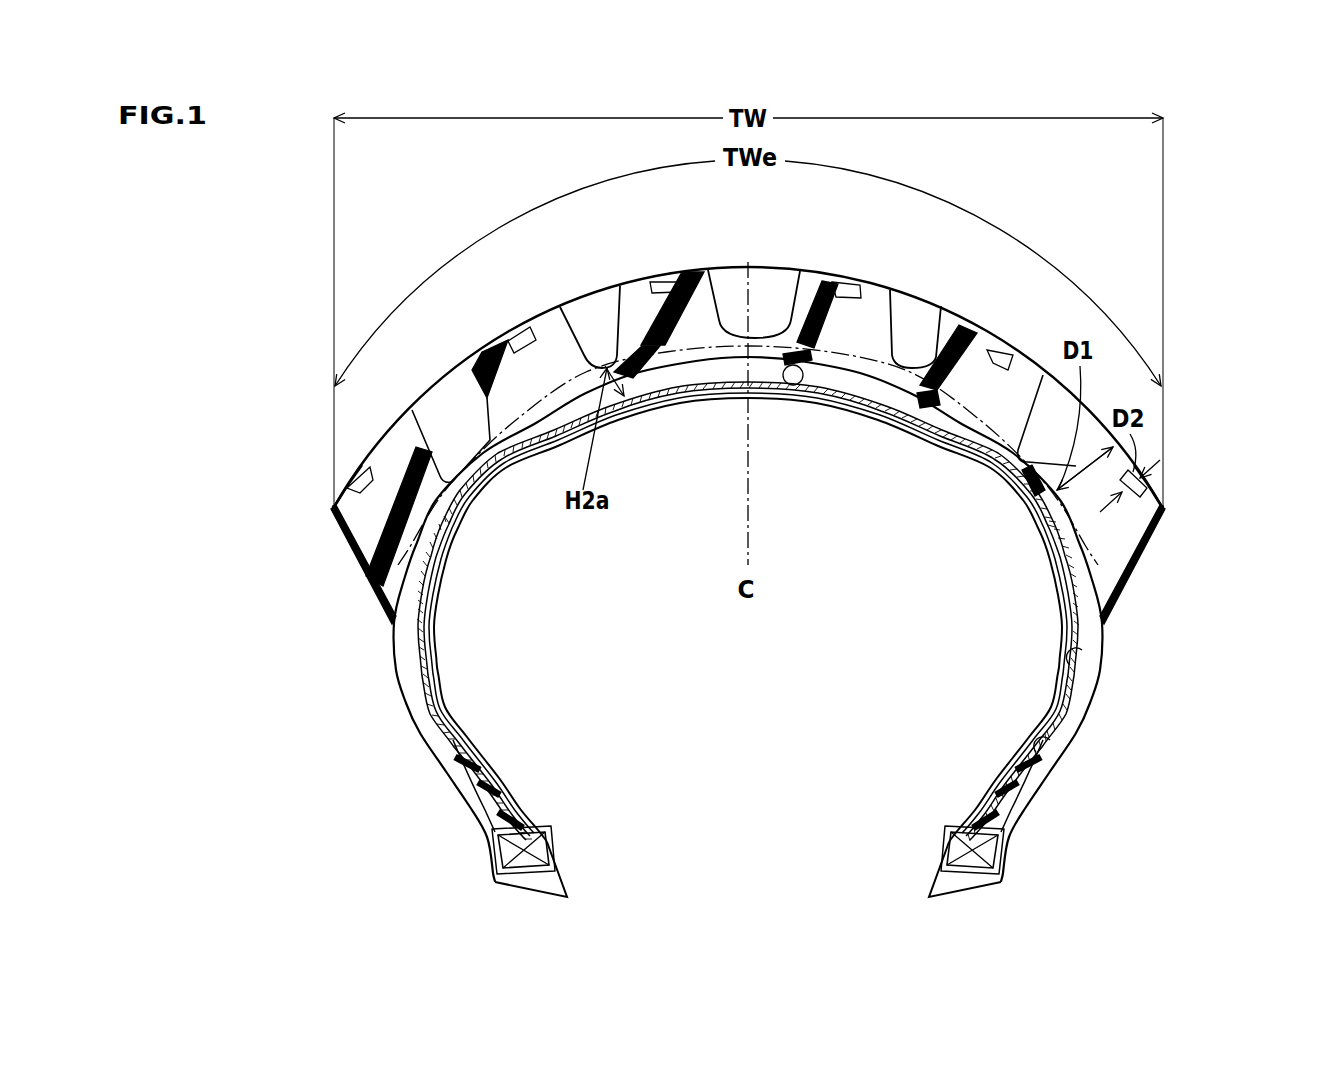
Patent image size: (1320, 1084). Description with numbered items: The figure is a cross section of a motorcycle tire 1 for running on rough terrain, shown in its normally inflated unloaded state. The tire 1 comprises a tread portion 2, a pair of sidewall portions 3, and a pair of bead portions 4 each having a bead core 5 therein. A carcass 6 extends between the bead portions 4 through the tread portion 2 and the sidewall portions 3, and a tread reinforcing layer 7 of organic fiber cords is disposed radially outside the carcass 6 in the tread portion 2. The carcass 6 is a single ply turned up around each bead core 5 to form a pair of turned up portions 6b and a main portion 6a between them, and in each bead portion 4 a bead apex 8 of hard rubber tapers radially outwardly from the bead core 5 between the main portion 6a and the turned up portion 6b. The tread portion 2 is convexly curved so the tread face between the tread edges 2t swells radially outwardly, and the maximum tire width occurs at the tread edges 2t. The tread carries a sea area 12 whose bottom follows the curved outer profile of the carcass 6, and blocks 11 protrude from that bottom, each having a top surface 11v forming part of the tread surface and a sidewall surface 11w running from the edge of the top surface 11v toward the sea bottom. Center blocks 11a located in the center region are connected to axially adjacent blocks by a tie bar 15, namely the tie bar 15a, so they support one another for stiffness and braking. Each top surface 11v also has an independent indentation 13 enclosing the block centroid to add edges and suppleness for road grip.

The motorcycle tire 1 is at (1195, 250).
The tread portion 2 is at (1073, 267).
The tread edges 2t is at (334, 506).
The sidewall portions 3 is at (380, 718).
The bead portions 4 is at (478, 852).
The bead core 5 is at (535, 855).
The carcass 6 is at (753, 612).
The main portion 6a is at (1072, 660).
The turned up portions 6b is at (1037, 742).
The tread reinforcing layer 7 is at (794, 385).
The bead apex 8 is at (500, 808).
The block 11 is at (484, 347).
The center blocks 11a is at (637, 282).
The top surface 11v is at (350, 486).
The sidewall surface 11w is at (430, 452).
The sea area 12 is at (395, 560).
The indentation 13 is at (337, 510).
The tie bar 15 is at (757, 330).
The tie bar 15a is at (600, 362).